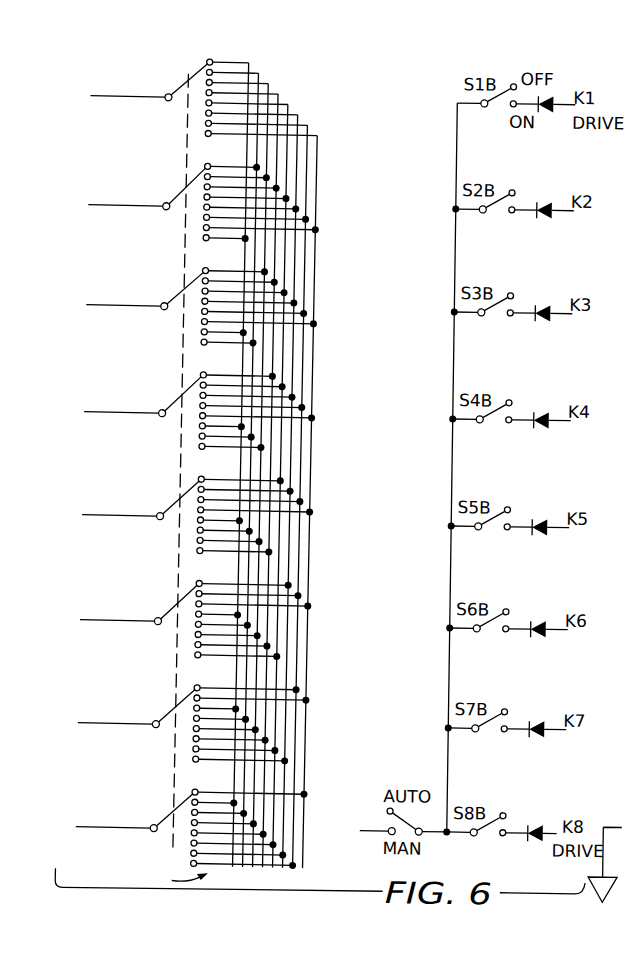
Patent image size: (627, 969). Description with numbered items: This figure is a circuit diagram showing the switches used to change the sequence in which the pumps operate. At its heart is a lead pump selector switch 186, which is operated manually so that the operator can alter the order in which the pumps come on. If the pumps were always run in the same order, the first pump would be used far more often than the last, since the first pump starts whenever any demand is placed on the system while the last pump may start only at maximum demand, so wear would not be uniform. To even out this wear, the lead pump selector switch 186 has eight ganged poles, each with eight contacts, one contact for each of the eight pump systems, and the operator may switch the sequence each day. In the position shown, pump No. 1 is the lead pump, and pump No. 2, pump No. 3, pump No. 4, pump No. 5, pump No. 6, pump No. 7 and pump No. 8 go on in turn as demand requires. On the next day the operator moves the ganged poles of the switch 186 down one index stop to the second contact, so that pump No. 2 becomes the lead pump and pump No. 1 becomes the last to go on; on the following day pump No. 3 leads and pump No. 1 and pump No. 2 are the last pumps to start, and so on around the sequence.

The lead pump selector switch 186 is at (227, 457).
The pump No. 1 is at (228, 63).
The pump No. 2 is at (232, 73).
The pump No. 3 is at (237, 83).
The pump No. 4 is at (242, 94).
The pump No. 5 is at (247, 104).
The pump No. 6 is at (252, 114).
The pump No. 7 is at (256, 124).
The pump No. 8 is at (261, 134).